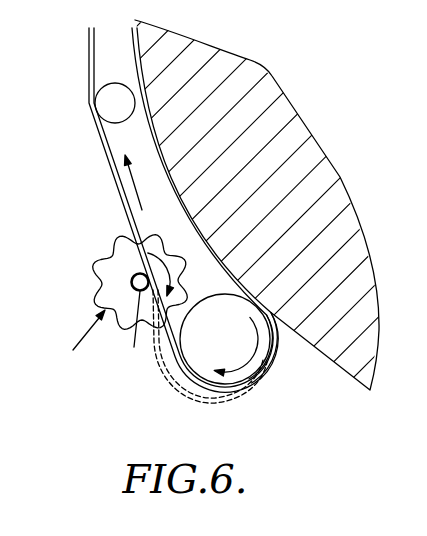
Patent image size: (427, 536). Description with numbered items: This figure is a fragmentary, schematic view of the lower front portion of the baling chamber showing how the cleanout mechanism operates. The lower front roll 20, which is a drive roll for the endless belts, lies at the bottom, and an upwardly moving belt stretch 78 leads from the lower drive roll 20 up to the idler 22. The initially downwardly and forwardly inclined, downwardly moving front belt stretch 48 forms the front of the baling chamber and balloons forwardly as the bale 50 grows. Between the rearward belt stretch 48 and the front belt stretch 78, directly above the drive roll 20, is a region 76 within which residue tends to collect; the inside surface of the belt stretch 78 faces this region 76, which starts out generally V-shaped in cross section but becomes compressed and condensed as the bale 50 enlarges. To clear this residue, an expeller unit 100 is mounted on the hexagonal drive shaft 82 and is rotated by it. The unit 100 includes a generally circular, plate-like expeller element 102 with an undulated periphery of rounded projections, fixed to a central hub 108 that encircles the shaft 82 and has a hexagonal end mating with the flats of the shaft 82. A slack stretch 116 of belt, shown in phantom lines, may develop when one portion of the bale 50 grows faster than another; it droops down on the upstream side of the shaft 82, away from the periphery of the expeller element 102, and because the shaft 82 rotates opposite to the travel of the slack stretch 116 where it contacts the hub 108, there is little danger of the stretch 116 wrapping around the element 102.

The lower front roll 20 is at (264, 352).
The idler 22 is at (115, 95).
The front belt stretch 48 is at (168, 170).
The bale 50 is at (300, 128).
The residue-collecting region 76 is at (203, 270).
The upwardly moving belt stretch 78 is at (122, 190).
The drive shaft 82 is at (130, 329).
The expeller unit 100 is at (75, 342).
The expeller element 102 is at (117, 257).
The hub 108 is at (131, 279).
The slack stretch 116 is at (203, 410).